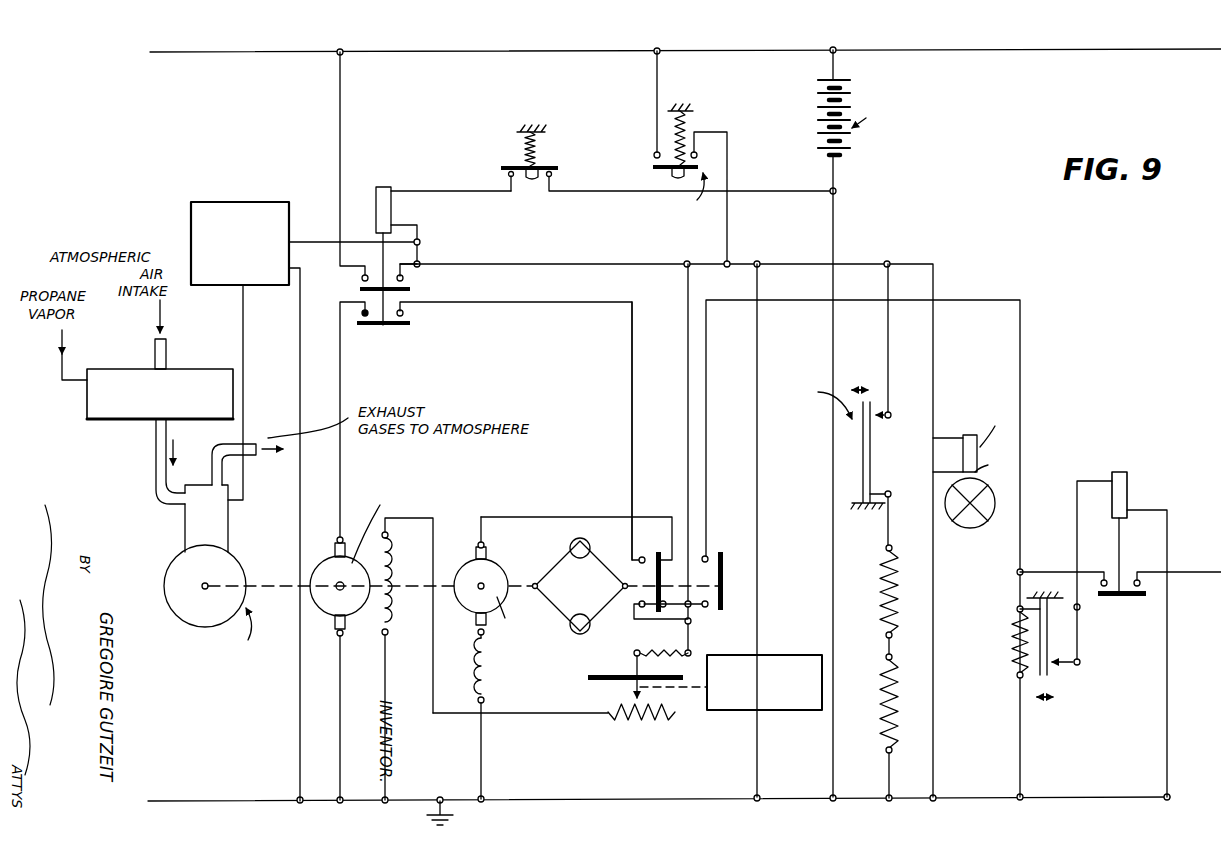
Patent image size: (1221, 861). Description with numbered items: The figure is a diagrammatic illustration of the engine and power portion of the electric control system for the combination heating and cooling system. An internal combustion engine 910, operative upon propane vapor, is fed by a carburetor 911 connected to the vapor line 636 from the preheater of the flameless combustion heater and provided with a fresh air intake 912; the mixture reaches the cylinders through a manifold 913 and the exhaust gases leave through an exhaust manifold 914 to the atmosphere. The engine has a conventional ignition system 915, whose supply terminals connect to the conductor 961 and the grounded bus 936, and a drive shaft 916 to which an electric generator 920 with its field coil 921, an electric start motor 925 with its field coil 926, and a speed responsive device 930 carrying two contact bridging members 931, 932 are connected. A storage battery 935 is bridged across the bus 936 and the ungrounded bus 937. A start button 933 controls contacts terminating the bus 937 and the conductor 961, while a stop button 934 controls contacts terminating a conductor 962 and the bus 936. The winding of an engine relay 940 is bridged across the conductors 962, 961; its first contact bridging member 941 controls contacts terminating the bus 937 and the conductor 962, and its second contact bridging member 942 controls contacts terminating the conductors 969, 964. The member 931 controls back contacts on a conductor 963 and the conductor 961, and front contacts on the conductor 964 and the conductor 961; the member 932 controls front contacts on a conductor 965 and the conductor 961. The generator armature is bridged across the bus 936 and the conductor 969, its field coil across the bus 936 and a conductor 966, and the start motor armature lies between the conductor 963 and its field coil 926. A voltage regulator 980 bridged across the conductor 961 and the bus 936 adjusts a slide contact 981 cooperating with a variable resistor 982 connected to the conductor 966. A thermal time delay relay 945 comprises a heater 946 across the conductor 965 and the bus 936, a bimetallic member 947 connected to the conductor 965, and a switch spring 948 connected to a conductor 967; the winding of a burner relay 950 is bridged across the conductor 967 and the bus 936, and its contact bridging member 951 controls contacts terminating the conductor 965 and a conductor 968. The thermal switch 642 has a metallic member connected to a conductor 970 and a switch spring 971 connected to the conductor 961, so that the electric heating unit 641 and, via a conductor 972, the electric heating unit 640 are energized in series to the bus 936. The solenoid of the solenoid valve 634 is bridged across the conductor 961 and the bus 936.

The + bus 937 is at (250, 58).
The – bus 936 is at (245, 804).
The ignition system 915 is at (268, 198).
The vapor line 636 is at (87, 355).
The fresh air intake 912 is at (166, 345).
The carburetor 911 is at (220, 372).
The manifold 913 is at (157, 467).
The exhaust manifold 914 is at (223, 461).
The internal combustion engine 910 is at (239, 570).
The drive shaft 916 is at (258, 588).
The engine relay 940 is at (391, 189).
The conductor 962 is at (465, 191).
The first contact bridging member 941 is at (410, 289).
The second contact bridging member 942 is at (389, 325).
The stop button 934 is at (540, 178).
The start button 933 is at (668, 176).
The storage battery 935 is at (872, 423).
The conductor 961 is at (513, 264).
The conductor 969 is at (341, 374).
The electric generator 920 is at (318, 555).
The field coil 921 is at (393, 605).
The start motor 925 is at (495, 568).
The field coil 926 is at (488, 684).
The conductor 963 is at (598, 517).
The speed responsive device 930 is at (596, 596).
The contact bridging member 931 is at (660, 552).
The contact bridging member 932 is at (721, 610).
The conductor 964 is at (633, 471).
The conductor 965 is at (707, 482).
The slide contact 981 is at (633, 684).
The variable resistor 982 is at (632, 721).
The conductor 966 is at (535, 714).
The voltage regulator 980 is at (785, 712).
The thermal switch 642 is at (826, 434).
The switch spring 971 is at (896, 355).
The conductor 970 is at (888, 522).
The electric heating unit 641 is at (880, 585).
The conductor 972 is at (886, 656).
The electric heating unit 640 is at (880, 728).
The solenoid valve 634 is at (975, 522).
The thermal time delay relay 945 is at (1072, 660).
The heater 946 is at (1018, 637).
The bimetallic member 947 is at (1050, 676).
The switch spring 948 is at (1080, 650).
The conductor 967 is at (1077, 530).
The burner relay 950 is at (1128, 495).
The contact bridging member 951 is at (1110, 596).
The conductor 968 is at (1190, 572).